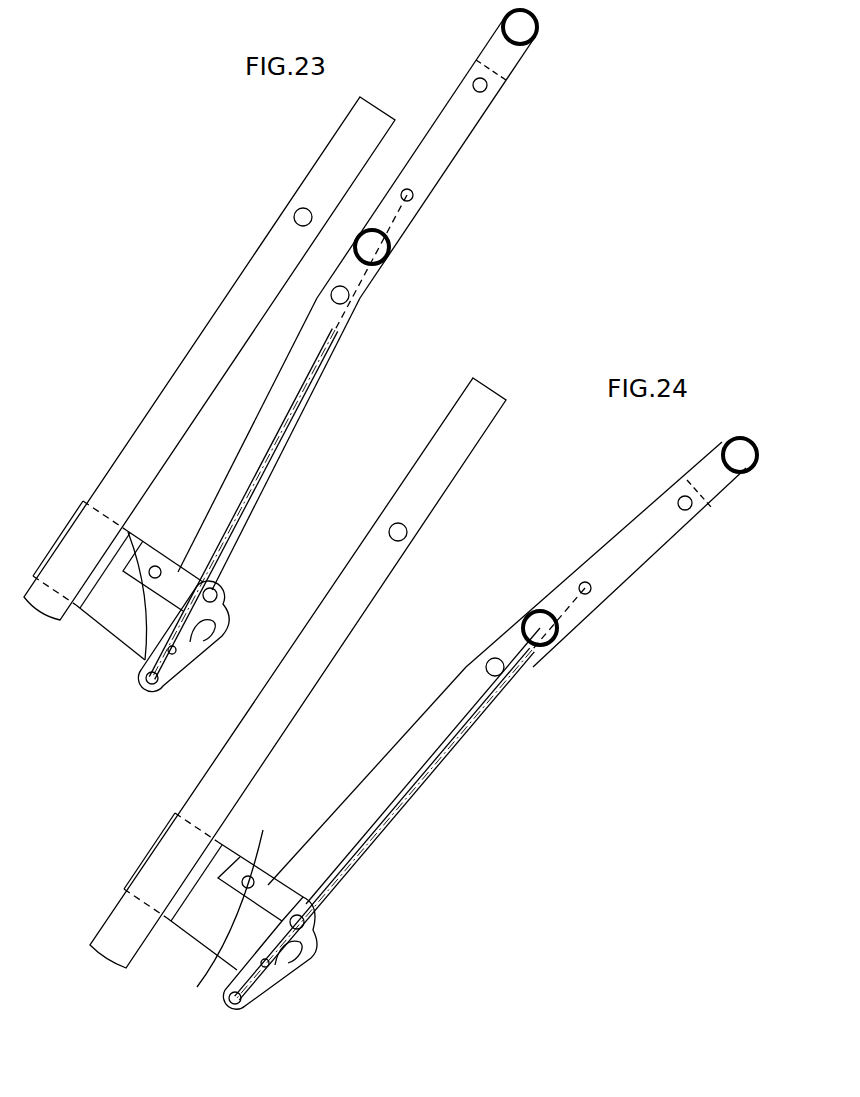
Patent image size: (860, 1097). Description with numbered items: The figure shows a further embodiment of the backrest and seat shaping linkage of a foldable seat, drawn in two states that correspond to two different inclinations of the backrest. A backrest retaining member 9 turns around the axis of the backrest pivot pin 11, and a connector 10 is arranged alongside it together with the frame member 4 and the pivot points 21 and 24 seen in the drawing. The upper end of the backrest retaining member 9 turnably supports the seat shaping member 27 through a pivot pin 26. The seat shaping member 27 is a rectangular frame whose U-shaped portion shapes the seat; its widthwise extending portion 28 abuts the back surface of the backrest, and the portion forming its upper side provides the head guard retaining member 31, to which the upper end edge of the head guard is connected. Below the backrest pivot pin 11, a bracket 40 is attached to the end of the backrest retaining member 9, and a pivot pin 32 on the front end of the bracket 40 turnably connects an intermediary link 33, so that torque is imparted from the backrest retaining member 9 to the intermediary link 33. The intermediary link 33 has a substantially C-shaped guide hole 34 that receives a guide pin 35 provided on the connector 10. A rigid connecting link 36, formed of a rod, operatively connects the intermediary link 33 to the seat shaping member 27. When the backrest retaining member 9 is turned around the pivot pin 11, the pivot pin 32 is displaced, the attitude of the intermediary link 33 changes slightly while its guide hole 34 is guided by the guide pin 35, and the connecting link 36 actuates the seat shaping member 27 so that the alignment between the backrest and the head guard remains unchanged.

In FIG. 23, the frame tube 4 is at (160, 400).
In FIG. 24, the frame tube 4 is at (322, 677).
In FIG. 23, the backrest retaining member 9 is at (230, 465).
In FIG. 24, the backrest retaining member 9 is at (400, 730).
In FIG. 23, the connector 10 is at (93, 613).
In FIG. 24, the connector 10 is at (193, 925).
In FIG. 23, the backrest pivot pin 11 is at (155, 565).
In FIG. 24, the backrest pivot pin 11 is at (250, 875).
In FIG. 23, the pivot 21 is at (330, 292).
In FIG. 24, the pivot 21 is at (488, 660).
In FIG. 23, the pivot hole 24 is at (295, 214).
In FIG. 24, the pivot hole 24 is at (410, 533).
In FIG. 23, the pivot pin 26 is at (485, 92).
In FIG. 24, the pivot pin 26 is at (690, 510).
In FIG. 23, the seat shaping member 27 is at (450, 143).
In FIG. 24, the seat shaping member 27 is at (637, 570).
In FIG. 23, the widthwise extending portion 28 is at (372, 232).
In FIG. 24, the widthwise extending portion 28 is at (535, 610).
In FIG. 23, the head guard retaining member 31 is at (537, 30).
In FIG. 24, the head guard retaining member 31 is at (733, 450).
In FIG. 23, the pivot pin 32 is at (223, 587).
In FIG. 24, the pivot pin 32 is at (308, 915).
In FIG. 23, the intermediary link 33 is at (227, 617).
In FIG. 24, the intermediary link 33 is at (315, 947).
In FIG. 23, the guide hole 34 is at (197, 635).
In FIG. 24, the guide hole 34 is at (277, 960).
In FIG. 23, the guide pin 35 is at (173, 653).
In FIG. 24, the guide pin 35 is at (263, 963).
In FIG. 23, the connecting link 36 is at (300, 430).
In FIG. 24, the connecting link 36 is at (397, 820).
In FIG. 23, the bracket 40 is at (145, 647).
In FIG. 24, the bracket 40 is at (247, 907).